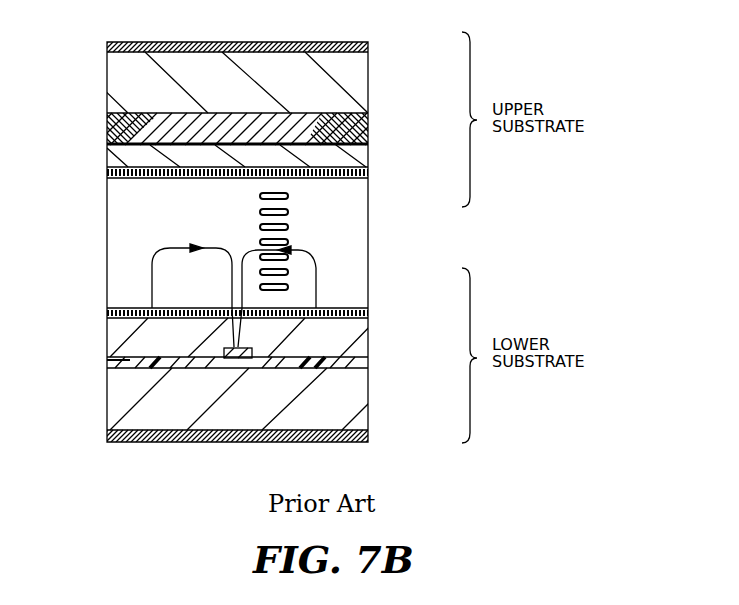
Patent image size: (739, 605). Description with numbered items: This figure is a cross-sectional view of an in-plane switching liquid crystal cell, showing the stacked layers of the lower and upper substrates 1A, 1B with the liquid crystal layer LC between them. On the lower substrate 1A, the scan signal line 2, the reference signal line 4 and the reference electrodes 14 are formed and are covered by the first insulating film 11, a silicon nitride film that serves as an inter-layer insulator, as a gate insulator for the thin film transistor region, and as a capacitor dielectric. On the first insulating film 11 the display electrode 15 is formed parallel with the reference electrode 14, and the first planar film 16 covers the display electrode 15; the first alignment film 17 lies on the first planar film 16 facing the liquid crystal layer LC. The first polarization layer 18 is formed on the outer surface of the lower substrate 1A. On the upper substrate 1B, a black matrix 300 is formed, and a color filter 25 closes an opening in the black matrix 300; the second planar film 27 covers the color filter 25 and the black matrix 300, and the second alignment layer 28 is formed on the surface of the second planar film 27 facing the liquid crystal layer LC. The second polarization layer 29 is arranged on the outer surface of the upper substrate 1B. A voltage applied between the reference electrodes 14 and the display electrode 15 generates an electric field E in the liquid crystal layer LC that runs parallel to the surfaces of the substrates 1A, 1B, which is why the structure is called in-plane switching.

The second polarization layer 29 is at (134, 42).
The color filter 25 is at (298, 113).
The upper substrate 1B is at (368, 75).
The black matrix 300 is at (107, 126).
The second planar film 27 is at (368, 154).
The second alignment layer 28 is at (368, 180).
The liquid crystal layer LC is at (368, 232).
The electric field E is at (286, 250).
The first alignment film 17 is at (358, 307).
The first planar film 16 is at (368, 327).
The scan signal line 2 is at (368, 362).
The first insulating film 11 is at (107, 360).
The reference electrode 14 is at (316, 308).
The display electrode 15 is at (252, 368).
The reference signal line 4 is at (152, 308).
The lower substrate 1A is at (368, 403).
The first polarization layer 18 is at (355, 442).